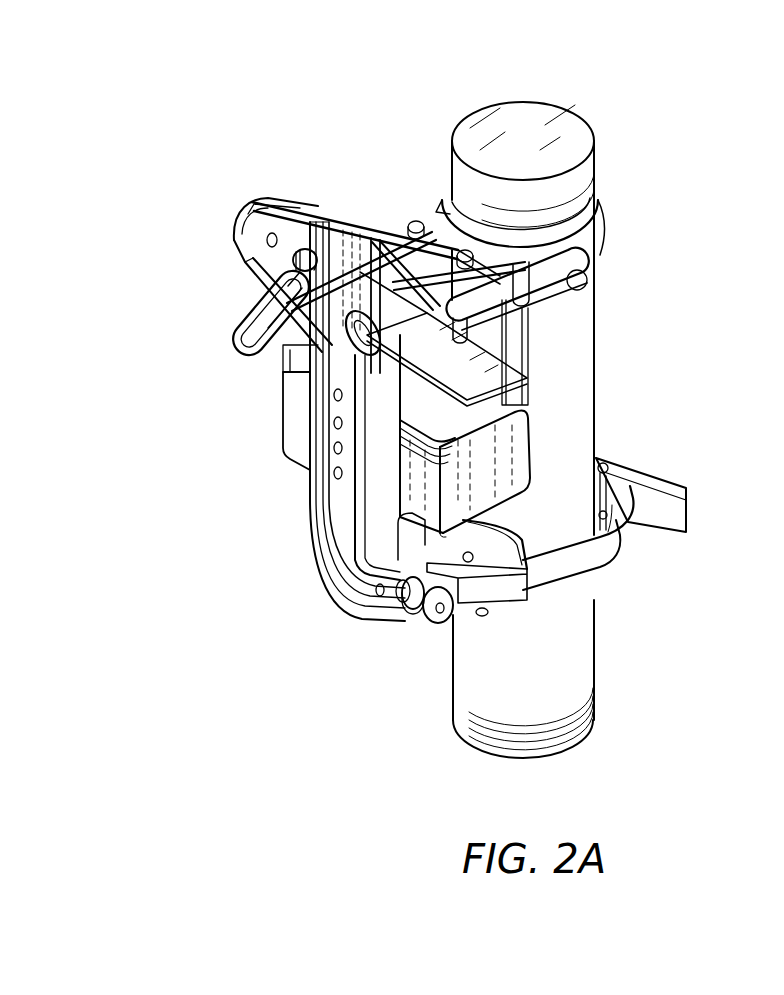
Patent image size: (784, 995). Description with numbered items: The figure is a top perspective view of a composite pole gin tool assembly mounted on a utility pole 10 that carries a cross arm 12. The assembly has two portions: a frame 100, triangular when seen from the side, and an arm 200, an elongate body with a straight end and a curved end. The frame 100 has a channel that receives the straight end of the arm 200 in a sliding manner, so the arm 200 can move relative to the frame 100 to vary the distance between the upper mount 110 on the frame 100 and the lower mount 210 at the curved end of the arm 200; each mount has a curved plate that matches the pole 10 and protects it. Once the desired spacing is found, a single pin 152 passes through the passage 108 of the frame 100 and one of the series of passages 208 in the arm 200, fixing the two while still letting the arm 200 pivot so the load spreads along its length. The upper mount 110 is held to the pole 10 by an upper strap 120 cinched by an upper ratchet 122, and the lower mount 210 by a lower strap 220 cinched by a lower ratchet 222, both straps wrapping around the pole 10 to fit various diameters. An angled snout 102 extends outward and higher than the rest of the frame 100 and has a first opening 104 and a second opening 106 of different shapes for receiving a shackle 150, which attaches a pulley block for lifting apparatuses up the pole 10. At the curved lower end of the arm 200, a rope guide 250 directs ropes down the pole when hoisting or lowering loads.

The utility pole 10 is at (548, 118).
The cross arm 12 is at (517, 432).
The frame 100 is at (350, 207).
The snout 102 is at (235, 237).
The first opening 104 is at (306, 250).
The second opening 106 is at (273, 198).
The passage 108 is at (296, 338).
The upper mount 110 is at (486, 233).
The upper strap 120 is at (594, 240).
The upper ratchet 122 is at (590, 282).
The shackle 150 is at (245, 300).
The pin 152 is at (285, 378).
The arm 200 is at (325, 497).
The series of passages 208 is at (322, 455).
The lower mount 210 is at (438, 624).
The lower strap 220 is at (572, 568).
The lower ratchet 222 is at (683, 522).
The rope guide 250 is at (423, 620).